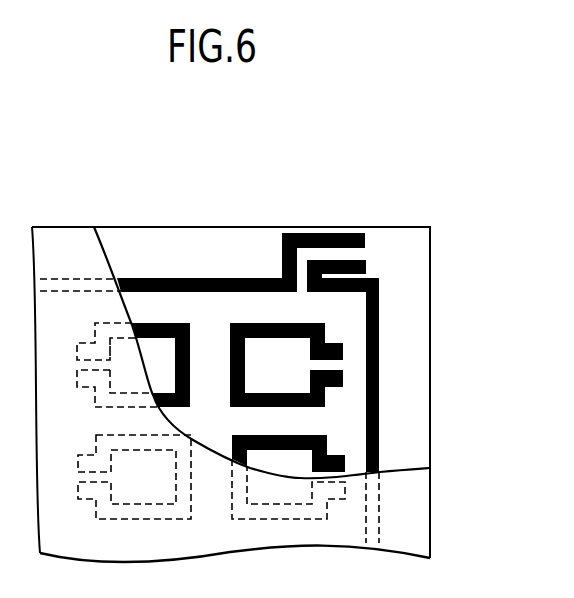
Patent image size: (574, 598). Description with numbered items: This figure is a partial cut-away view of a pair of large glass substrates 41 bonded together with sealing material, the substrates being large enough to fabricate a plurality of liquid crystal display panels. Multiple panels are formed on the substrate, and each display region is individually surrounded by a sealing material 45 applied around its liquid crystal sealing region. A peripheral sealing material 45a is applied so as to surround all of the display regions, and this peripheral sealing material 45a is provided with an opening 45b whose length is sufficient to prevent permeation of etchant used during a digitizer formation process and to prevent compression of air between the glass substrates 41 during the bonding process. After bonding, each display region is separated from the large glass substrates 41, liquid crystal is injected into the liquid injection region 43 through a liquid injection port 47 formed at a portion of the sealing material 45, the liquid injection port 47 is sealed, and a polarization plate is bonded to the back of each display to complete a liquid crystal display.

The glass substrate 41 is at (430, 422).
The liquid injection region 43 is at (254, 352).
The sealing material 45 is at (330, 324).
The peripheral sealing material 45a is at (379, 368).
The opening 45b is at (303, 252).
The liquid injection port 47 is at (345, 368).